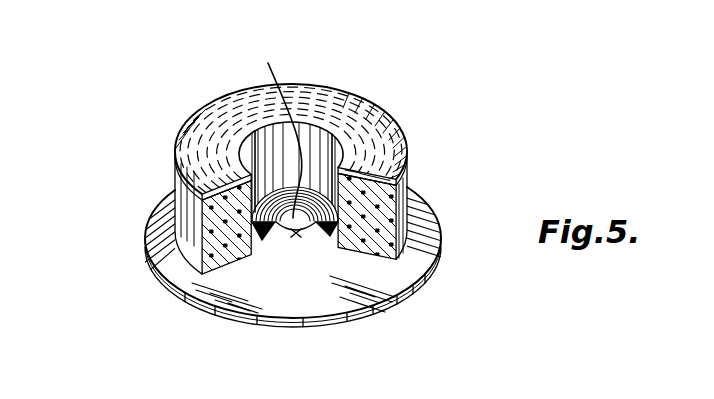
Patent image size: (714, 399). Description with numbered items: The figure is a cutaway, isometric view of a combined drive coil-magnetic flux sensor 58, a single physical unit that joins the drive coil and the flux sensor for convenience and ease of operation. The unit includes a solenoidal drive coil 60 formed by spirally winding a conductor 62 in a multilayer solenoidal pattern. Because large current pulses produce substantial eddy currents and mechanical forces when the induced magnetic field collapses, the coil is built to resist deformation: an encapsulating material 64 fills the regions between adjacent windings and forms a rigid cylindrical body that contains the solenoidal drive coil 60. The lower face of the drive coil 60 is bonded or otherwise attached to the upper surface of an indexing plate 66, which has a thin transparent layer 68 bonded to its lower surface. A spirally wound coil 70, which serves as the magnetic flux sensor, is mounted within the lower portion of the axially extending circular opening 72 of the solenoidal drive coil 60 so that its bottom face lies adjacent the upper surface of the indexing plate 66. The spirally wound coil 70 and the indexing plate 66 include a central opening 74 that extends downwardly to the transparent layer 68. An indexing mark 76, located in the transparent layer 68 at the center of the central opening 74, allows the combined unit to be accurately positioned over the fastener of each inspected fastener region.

The combined drive coil-magnetic flux sensor 58 is at (178, 94).
The solenoidal drive coil 60 is at (175, 148).
The conductor 62 is at (200, 252).
The encapsulating material 64 is at (203, 210).
The indexing plate 66 is at (404, 268).
The thin transparent layer 68 is at (397, 296).
The spirally wound coil 70 is at (272, 233).
The circular opening 72 is at (310, 145).
The central opening 74 is at (282, 129).
The indexing mark 76 is at (297, 238).